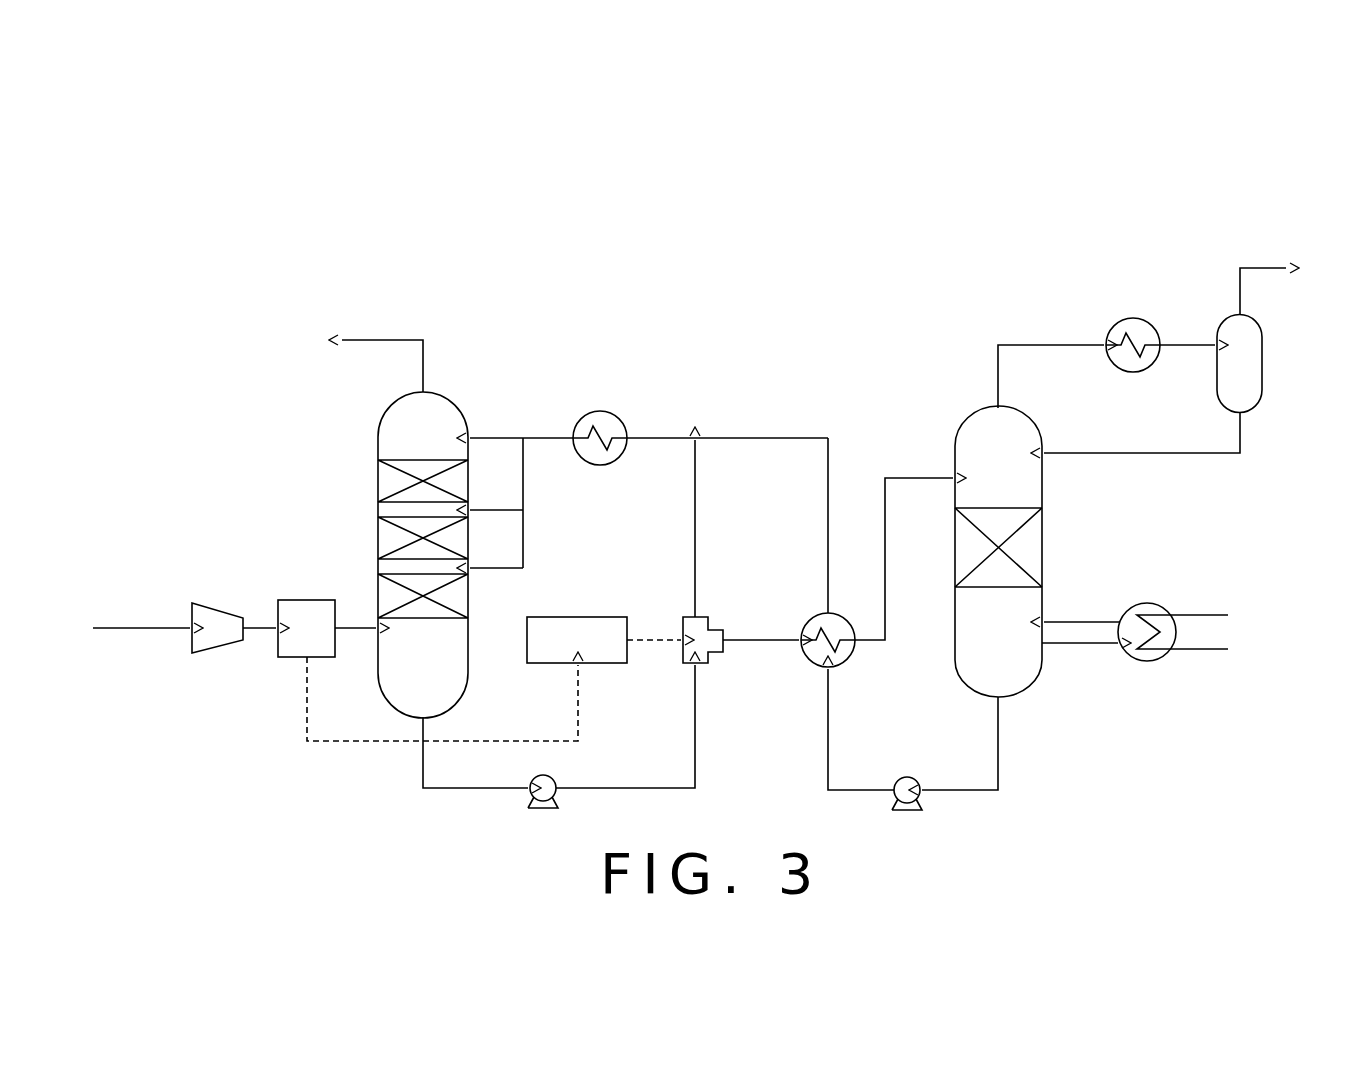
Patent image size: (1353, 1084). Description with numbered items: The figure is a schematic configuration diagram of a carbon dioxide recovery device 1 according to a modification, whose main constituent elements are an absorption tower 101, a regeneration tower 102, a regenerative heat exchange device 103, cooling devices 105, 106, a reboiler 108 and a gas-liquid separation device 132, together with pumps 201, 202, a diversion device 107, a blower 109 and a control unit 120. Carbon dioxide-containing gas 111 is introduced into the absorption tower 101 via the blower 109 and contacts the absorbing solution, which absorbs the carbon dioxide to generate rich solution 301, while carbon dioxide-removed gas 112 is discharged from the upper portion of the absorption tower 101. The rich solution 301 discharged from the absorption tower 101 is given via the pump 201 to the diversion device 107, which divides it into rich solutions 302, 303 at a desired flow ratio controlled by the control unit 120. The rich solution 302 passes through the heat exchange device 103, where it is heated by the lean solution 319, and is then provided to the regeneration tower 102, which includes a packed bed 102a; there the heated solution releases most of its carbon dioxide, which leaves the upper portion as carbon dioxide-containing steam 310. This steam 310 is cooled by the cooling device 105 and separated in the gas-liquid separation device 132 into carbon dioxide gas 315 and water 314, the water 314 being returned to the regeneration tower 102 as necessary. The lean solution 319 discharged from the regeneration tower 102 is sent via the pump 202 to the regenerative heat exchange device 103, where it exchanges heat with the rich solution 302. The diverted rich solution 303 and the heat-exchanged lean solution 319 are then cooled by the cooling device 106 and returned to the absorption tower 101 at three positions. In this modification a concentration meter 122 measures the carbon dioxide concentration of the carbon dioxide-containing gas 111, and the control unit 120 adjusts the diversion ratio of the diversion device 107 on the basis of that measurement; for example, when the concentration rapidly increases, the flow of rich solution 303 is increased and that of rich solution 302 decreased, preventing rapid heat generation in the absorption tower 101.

The carbon dioxide recovery device 1 is at (1153, 190).
The absorption tower 101 is at (386, 412).
The regeneration tower 102 is at (1044, 488).
The packed bed 102a is at (1044, 550).
The regenerative heat exchange device 103 is at (805, 657).
The cooling device 105 is at (1131, 318).
The cooling device 106 is at (600, 410).
The diversion device 107 is at (678, 657).
The reboiler 108 is at (1153, 662).
The blower 109 is at (212, 603).
The carbon dioxide-containing gas 111 is at (152, 623).
The carbon dioxide-removed gas 112 is at (382, 338).
The control unit 120 is at (569, 617).
The concentration meter 122 is at (303, 598).
The gas-liquid separation device 132 is at (1263, 364).
The pump 201 is at (557, 782).
The pump 202 is at (905, 777).
The rich solution 301 is at (422, 778).
The rich solution 302 is at (757, 638).
The rich solution 303 is at (693, 515).
The carbon dioxide-containing steam 310 is at (1015, 343).
The water 314 is at (1242, 441).
The carbon dioxide gas 315 is at (1255, 266).
The lean solution 319 is at (1000, 775).